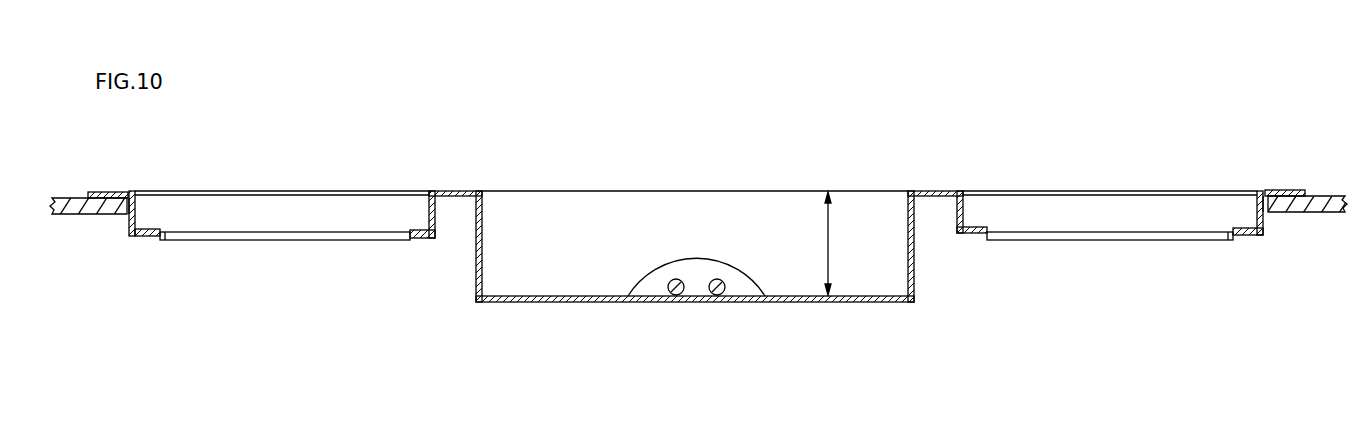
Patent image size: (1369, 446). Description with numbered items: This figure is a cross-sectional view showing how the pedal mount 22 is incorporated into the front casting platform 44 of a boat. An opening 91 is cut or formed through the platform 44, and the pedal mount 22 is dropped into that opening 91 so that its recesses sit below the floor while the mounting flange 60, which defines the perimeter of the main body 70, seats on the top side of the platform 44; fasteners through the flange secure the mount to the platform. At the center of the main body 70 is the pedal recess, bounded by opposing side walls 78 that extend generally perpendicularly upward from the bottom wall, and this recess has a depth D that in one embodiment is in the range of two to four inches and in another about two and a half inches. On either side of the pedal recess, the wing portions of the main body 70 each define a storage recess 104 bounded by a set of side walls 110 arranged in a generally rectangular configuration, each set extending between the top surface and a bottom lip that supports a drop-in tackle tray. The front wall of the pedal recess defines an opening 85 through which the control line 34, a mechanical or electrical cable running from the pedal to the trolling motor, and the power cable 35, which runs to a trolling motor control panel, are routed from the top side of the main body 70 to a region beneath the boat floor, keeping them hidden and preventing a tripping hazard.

The pedal mount 22 is at (453, 155).
The front casting platform 44 is at (67, 215).
The mounting flange 60 is at (103, 192).
The main body 70 is at (1285, 190).
The side walls 110 is at (136, 202).
The opening 91 is at (127, 208).
The storage recess 104 is at (157, 230).
The side walls 78 is at (483, 240).
The opening 85 is at (707, 258).
The power cable 35 is at (673, 294).
The control line 34 is at (720, 295).
The depth D is at (828, 241).